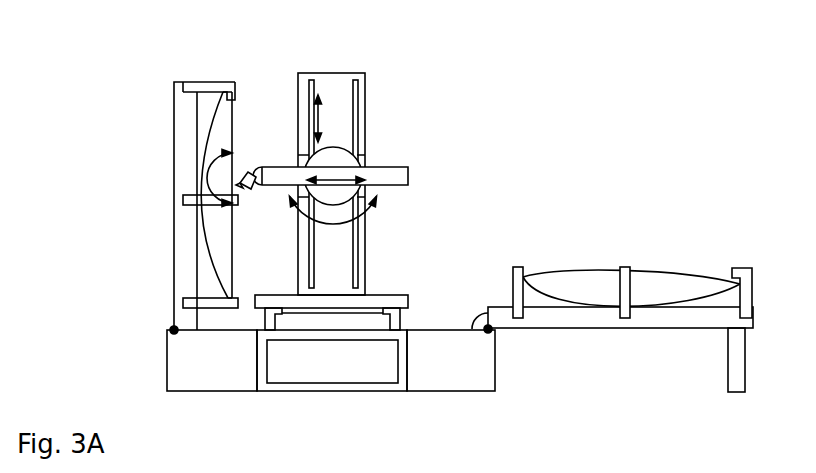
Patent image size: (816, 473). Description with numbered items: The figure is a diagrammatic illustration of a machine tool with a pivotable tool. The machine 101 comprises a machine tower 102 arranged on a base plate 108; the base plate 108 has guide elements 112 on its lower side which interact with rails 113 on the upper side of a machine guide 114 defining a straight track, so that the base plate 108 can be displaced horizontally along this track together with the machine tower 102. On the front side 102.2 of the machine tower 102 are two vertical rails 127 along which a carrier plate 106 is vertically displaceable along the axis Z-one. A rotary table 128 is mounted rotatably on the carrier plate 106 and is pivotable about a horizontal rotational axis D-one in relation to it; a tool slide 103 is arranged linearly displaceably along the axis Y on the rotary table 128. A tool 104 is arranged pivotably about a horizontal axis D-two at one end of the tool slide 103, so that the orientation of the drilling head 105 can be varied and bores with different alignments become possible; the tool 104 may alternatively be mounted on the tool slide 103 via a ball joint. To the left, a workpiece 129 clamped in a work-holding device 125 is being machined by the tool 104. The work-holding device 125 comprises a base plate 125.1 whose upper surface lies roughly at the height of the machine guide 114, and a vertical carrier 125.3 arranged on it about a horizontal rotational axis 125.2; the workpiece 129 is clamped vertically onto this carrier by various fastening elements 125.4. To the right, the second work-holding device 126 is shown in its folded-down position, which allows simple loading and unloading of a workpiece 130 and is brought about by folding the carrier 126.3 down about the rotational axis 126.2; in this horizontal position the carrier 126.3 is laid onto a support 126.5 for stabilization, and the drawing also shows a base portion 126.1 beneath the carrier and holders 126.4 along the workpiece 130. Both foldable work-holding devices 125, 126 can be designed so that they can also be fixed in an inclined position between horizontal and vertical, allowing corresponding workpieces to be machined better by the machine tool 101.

The machine 101 is at (380, 234).
The machine tower 102 is at (350, 159).
The front side 102.2 is at (337, 87).
The tool slide 103 is at (395, 170).
The tool 104 is at (248, 190).
The drilling head 105 is at (238, 184).
The carrier plate 106 is at (362, 158).
The base plate 108 is at (372, 302).
The guide elements 112 is at (408, 308).
The rails 113 is at (398, 330).
The machine guide 114 is at (353, 385).
The work-holding device 125 is at (146, 213).
The base plate 125.1 is at (203, 368).
The horizontal rotational axis 125.2 is at (173, 328).
The vertical carrier 125.3 is at (182, 223).
The fastening elements 125.4 is at (218, 88).
The second work-holding device 126 is at (580, 329).
The table support block 126.1 is at (472, 365).
The rotational axis 126.2 is at (490, 330).
The carrier 126.3 is at (603, 317).
The workpiece support 126.4 is at (625, 273).
The support 126.5 is at (735, 350).
The vertical rails 127 is at (358, 110).
The rotary table 128 is at (347, 190).
The workpiece 129 is at (220, 244).
The workpiece 130 is at (660, 280).